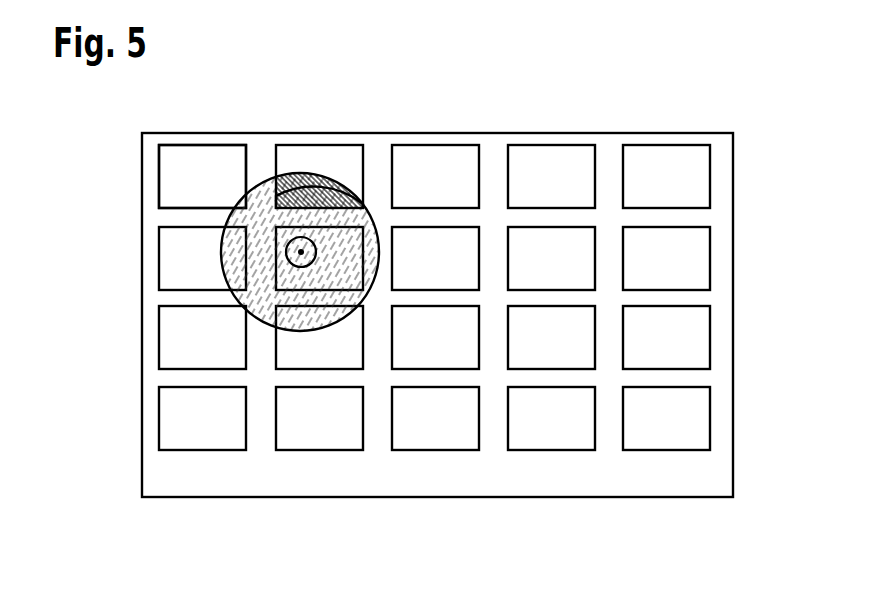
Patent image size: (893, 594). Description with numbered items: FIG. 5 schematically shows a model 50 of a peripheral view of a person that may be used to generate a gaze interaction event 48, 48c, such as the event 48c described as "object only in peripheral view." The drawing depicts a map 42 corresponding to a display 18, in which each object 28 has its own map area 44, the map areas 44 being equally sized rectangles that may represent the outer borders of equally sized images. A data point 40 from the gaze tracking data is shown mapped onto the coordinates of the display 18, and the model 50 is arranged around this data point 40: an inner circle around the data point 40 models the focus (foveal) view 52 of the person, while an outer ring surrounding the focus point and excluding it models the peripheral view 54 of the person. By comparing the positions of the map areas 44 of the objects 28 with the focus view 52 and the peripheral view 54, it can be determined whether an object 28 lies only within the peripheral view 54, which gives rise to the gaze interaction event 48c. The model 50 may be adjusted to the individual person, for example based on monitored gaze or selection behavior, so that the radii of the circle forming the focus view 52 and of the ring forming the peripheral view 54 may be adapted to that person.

The map 42 is at (688, 115).
The map area 44 is at (178, 184).
The object 28 is at (185, 158).
The display 18 is at (262, 158).
The gaze interaction event 48 is at (322, 138).
The gaze interaction event 48c is at (312, 190).
The model of a peripheral view 50 is at (447, 168).
The focus view 52 is at (287, 248).
The data point 40 is at (300, 253).
The peripheral view 54 is at (263, 310).